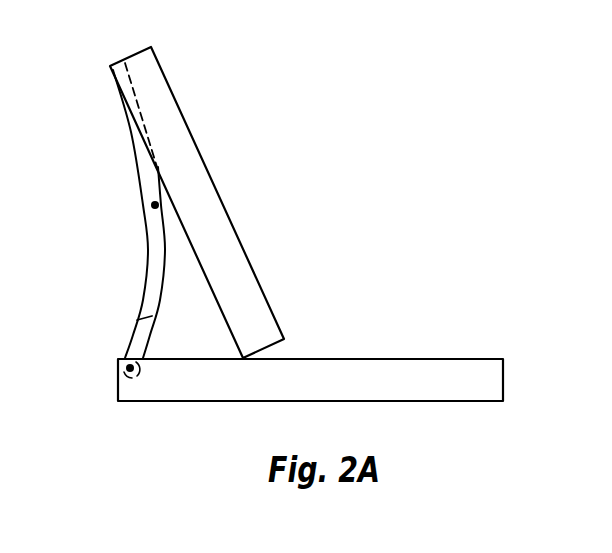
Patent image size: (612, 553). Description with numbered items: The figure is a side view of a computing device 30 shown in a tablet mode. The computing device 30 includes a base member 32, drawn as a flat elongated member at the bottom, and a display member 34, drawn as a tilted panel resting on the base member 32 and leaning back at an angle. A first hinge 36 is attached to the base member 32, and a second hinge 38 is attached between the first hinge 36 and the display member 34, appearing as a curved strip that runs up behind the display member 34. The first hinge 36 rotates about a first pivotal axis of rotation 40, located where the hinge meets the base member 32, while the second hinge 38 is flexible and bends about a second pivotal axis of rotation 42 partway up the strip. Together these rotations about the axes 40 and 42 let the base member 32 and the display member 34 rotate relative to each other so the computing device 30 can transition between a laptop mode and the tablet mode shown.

The computing device 30 is at (392, 109).
The base member 32 is at (377, 359).
The display member 34 is at (162, 72).
The first hinge 36 is at (150, 335).
The second hinge 38 is at (132, 132).
The first pivotal axis of rotation 40 is at (120, 362).
The second pivotal axis of rotation 42 is at (151, 204).